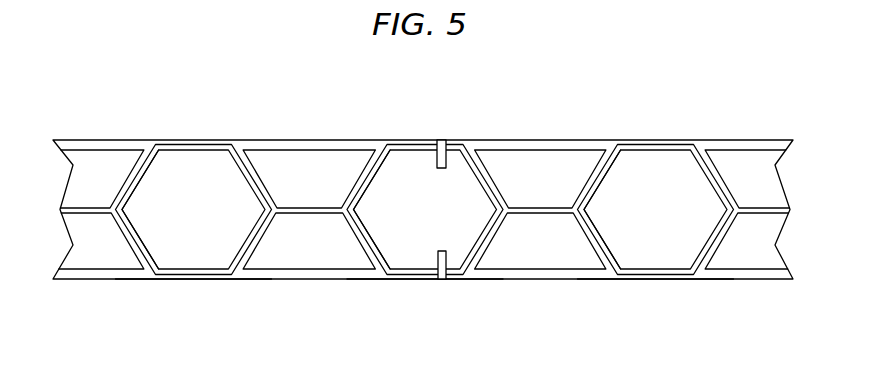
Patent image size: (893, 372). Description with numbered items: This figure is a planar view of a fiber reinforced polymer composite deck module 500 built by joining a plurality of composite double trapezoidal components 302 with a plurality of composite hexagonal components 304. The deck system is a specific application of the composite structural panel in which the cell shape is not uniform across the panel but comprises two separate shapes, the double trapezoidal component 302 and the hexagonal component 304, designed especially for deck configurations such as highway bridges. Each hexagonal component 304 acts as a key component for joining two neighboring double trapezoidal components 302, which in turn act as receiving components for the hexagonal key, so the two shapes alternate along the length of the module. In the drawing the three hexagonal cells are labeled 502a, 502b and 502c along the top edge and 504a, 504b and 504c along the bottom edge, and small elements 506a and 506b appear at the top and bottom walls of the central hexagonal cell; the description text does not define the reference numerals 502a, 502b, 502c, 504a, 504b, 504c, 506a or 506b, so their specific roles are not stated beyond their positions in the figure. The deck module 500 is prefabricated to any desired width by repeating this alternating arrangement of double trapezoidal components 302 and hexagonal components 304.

The FRP composite deck module 500 is at (722, 81).
The double trapezoidal component 302 is at (287, 143).
The hexagonal component 304 is at (147, 235).
The hexagonal cell module 502a is at (190, 141).
The hexagonal cell module 502b is at (423, 141).
The hexagonal cell module 502c is at (653, 141).
The lower face of cell module 504a is at (192, 280).
The lower face of cell module 504b is at (423, 280).
The lower face of cell module 504c is at (655, 280).
The locking tab 506a is at (449, 157).
The locking tab 506b is at (447, 263).